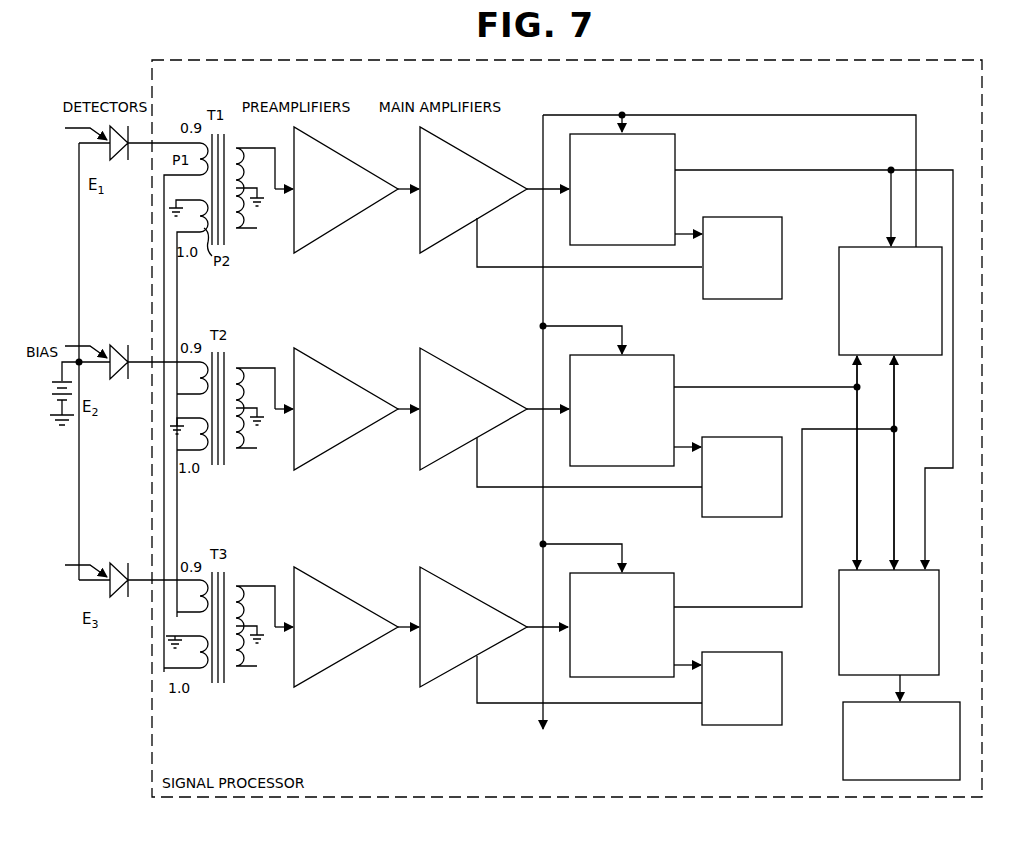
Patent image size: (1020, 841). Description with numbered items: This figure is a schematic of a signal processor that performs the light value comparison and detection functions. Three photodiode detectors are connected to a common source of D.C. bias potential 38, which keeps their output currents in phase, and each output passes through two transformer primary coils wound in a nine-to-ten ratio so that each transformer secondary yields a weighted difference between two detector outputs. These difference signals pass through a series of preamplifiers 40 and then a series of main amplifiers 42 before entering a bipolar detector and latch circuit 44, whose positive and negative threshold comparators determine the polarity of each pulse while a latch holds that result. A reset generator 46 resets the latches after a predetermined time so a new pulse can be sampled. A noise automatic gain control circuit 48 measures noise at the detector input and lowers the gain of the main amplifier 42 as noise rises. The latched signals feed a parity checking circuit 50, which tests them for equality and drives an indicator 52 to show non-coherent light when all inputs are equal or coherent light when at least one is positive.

The source of D.C. bias potential 38 is at (52, 400).
The preamplifier 40 is at (362, 167).
The main amplifier 42 is at (482, 167).
The bipolar detector and latch circuit 44 is at (675, 155).
The reset generator 46 is at (839, 309).
The noise automatic gain control circuit 48 is at (782, 264).
The parity checking circuit 50 is at (841, 568).
The indicator 52 is at (843, 748).